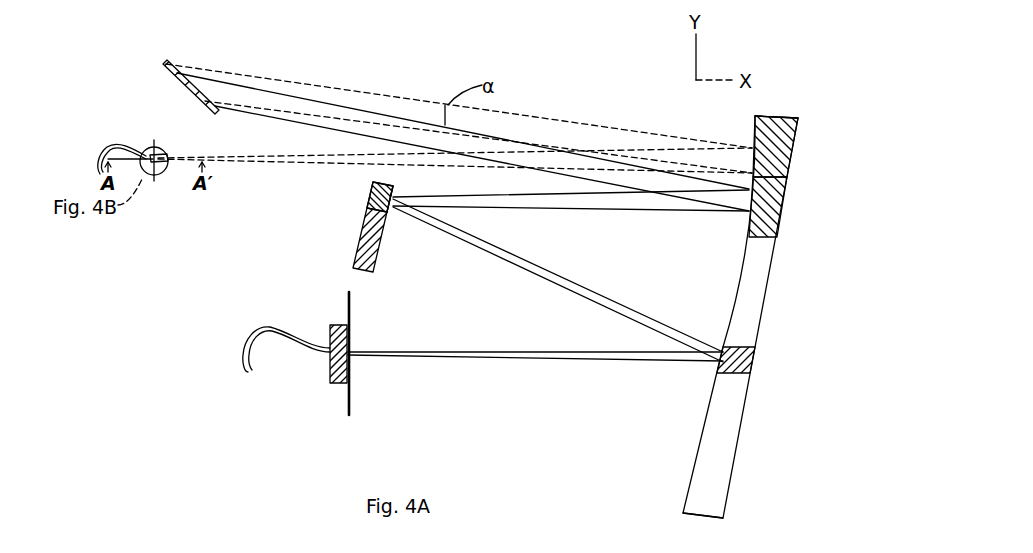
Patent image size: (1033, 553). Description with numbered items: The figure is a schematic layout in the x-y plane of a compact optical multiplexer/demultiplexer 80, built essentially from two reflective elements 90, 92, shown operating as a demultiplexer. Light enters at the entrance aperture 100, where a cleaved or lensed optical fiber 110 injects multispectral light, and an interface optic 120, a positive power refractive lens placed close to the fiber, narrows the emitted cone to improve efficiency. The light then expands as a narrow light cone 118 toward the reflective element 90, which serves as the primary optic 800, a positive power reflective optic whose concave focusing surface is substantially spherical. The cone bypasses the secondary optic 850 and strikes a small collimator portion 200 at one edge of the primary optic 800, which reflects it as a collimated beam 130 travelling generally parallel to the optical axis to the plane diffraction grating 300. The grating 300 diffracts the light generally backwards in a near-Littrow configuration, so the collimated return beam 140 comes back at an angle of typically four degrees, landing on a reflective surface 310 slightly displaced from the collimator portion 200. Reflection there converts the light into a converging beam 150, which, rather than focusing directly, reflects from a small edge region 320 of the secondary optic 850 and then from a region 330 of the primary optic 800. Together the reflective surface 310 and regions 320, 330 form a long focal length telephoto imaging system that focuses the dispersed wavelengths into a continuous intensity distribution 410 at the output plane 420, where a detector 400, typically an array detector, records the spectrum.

The optical multiplexer/demultiplexer 80 is at (551, 76).
The reflective element 90 is at (771, 307).
The reflective element 92 is at (368, 207).
The entrance aperture 100 is at (148, 150).
The optical fiber 110 is at (98, 167).
The light cone 118 is at (290, 158).
The interface optic 120 is at (160, 164).
The collimated beam 130 is at (403, 96).
The collimated return beam 140 is at (330, 100).
The converging beam 150 is at (498, 287).
The collimator portion 200 is at (754, 125).
The diffraction grating 300 is at (170, 70).
The reflective surface 310 is at (747, 220).
The region 320 is at (373, 198).
The region 330 is at (722, 368).
The detector 400 is at (340, 383).
The intensity distribution 410 is at (350, 353).
The output plane 420 is at (350, 403).
The primary optic 800 is at (697, 460).
The secondary optic 850 is at (357, 252).